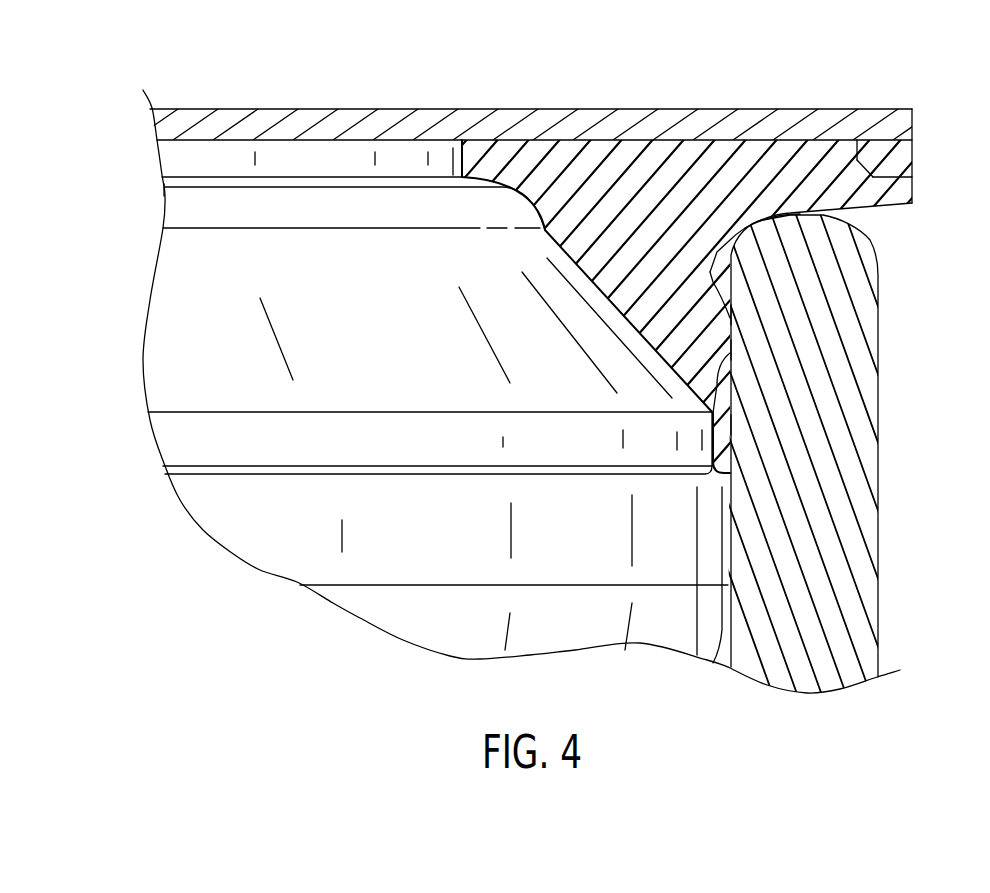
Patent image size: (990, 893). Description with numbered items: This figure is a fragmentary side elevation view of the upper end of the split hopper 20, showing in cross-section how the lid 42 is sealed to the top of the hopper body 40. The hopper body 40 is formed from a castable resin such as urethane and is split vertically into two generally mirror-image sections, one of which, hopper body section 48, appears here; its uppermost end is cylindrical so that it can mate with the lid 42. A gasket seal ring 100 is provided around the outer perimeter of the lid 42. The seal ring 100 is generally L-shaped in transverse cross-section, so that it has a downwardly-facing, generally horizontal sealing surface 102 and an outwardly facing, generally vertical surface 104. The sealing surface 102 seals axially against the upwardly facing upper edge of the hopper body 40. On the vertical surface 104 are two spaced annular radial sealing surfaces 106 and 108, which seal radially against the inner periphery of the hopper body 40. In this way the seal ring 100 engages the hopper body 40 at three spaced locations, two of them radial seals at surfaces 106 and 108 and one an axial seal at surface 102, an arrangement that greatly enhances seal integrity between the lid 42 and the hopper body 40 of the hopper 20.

The hopper 20 is at (805, 74).
The hopper body 40 is at (318, 265).
The lid 42 is at (503, 120).
The hopper body section 48 is at (853, 550).
The gasket seal ring 100 is at (705, 172).
The sealing surface 102 is at (800, 218).
The vertical surface 104 is at (729, 350).
The annular radial sealing surface 106 is at (729, 313).
The annular radial sealing surface 108 is at (729, 430).